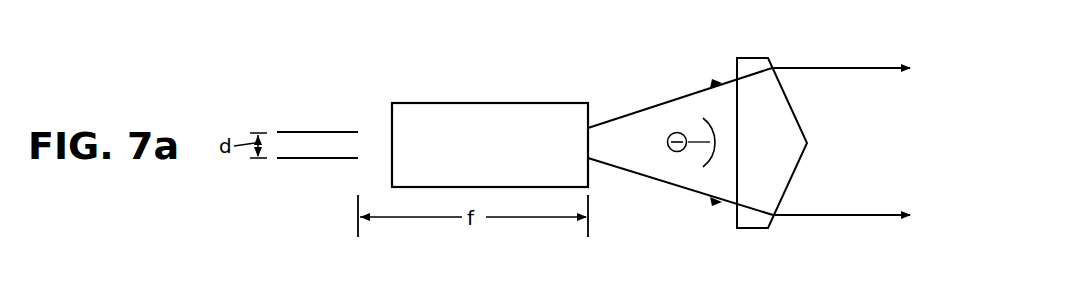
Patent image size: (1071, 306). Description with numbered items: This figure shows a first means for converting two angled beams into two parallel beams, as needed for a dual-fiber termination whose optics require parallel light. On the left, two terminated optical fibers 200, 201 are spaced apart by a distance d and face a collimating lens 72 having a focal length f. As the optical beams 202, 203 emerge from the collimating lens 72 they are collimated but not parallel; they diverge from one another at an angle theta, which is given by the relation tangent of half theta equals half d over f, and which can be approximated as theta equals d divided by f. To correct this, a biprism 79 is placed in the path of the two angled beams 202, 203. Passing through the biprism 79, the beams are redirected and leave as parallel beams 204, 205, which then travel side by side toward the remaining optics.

The collimating lens 72 is at (475, 103).
The biprism 79 is at (747, 62).
The terminated optical fiber 200 is at (310, 131).
The terminated optical fiber 201 is at (295, 159).
The optical beam 202 is at (668, 100).
The optical beam 203 is at (660, 183).
The parallel beam 204 is at (832, 63).
The parallel beam 205 is at (837, 217).